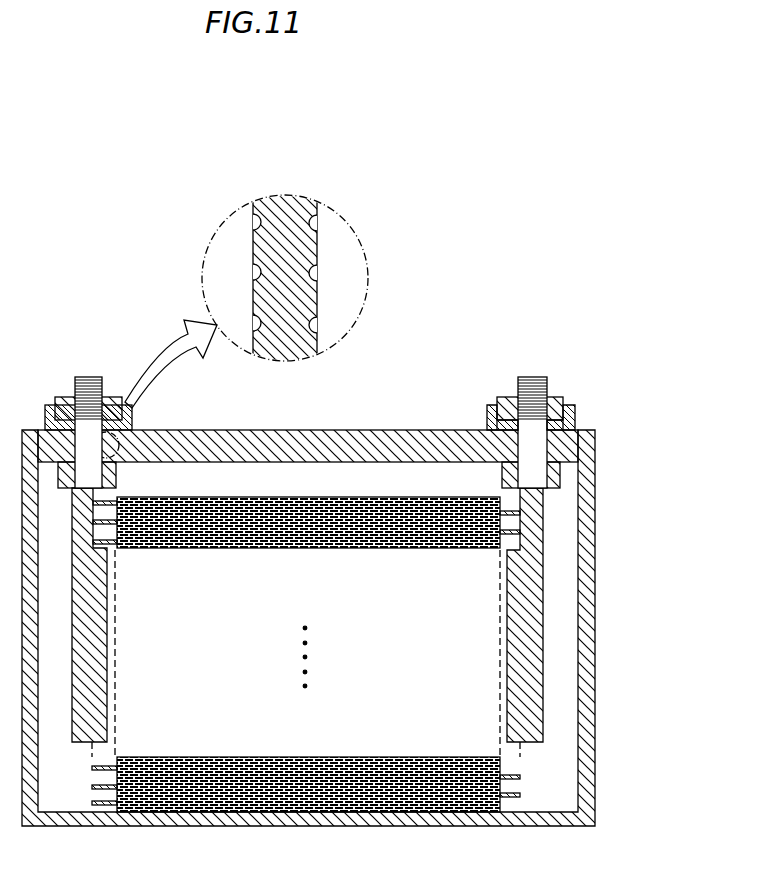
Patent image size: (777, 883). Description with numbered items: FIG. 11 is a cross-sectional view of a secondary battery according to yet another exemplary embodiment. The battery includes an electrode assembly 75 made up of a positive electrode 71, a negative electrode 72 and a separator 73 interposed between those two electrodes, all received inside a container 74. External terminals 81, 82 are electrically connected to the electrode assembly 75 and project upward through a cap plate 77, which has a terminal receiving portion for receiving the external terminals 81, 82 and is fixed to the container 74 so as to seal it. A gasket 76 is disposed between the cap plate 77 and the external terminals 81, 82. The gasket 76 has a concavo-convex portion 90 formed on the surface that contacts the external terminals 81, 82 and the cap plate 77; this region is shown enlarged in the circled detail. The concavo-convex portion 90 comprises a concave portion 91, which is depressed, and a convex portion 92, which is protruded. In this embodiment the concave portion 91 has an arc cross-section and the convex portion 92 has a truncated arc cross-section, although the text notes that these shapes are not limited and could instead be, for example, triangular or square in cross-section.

The positive electrode 71 is at (324, 805).
The negative electrode 72 is at (163, 800).
The separator 73 is at (244, 797).
The container 74 is at (595, 621).
The electrode assembly 75 is at (398, 730).
The gasket 76 is at (574, 406).
The cap plate 77 is at (350, 428).
The external terminal 81 is at (90, 378).
The external terminal 82 is at (537, 378).
The concavo-convex portion 90 is at (335, 280).
The concave portion 91 is at (311, 222).
The convex portion 92 is at (317, 248).